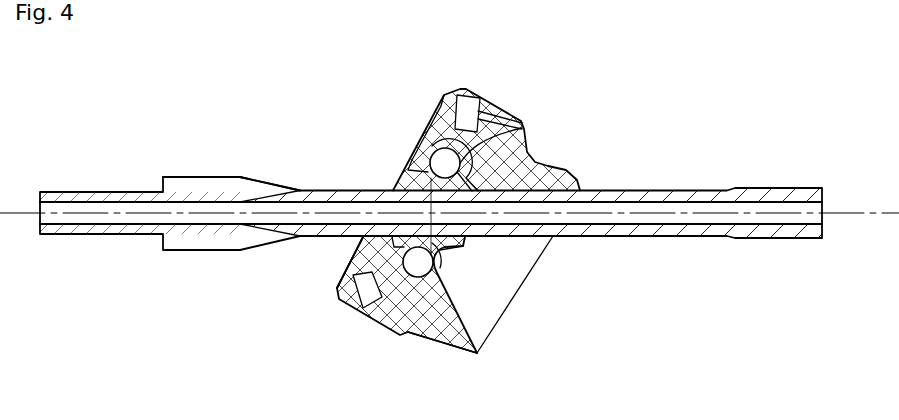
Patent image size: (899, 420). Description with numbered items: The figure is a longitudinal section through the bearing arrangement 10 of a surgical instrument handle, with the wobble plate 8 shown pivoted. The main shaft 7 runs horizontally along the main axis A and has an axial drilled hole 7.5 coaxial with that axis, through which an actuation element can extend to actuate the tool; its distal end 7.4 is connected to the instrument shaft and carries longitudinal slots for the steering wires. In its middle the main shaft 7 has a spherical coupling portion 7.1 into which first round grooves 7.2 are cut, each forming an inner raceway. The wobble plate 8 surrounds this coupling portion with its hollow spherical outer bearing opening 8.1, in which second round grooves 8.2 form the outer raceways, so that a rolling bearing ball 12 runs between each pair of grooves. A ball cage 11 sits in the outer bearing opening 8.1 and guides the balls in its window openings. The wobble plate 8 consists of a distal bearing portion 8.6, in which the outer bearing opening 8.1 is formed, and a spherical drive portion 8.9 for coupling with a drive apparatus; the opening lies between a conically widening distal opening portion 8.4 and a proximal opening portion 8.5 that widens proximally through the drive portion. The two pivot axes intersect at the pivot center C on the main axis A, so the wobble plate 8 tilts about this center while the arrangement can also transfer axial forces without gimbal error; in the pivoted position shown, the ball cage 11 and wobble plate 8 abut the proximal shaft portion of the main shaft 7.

The bearing arrangement 10 is at (431, 203).
The main shaft 7 is at (431, 204).
The spherical coupling portion 7.1 is at (402, 190).
The first round grooves 7.2 is at (406, 170).
The distal end of the main shaft 7.4 is at (93, 195).
The axial drilled hole 7.5 is at (102, 218).
The wobble plate 8 is at (449, 203).
The hollow spherical outer bearing opening 8.1 is at (387, 247).
The second round grooves 8.2 is at (505, 132).
The distal opening portion 8.4 is at (432, 150).
The proximal opening portion 8.5 is at (485, 323).
The distal bearing portion 8.6 is at (382, 320).
The spherical drive portion 8.9 is at (457, 340).
The ball cage 11 is at (481, 177).
The rolling bearing ball 12 is at (420, 258).
The pivot center C is at (457, 225).
The main axis A is at (803, 210).